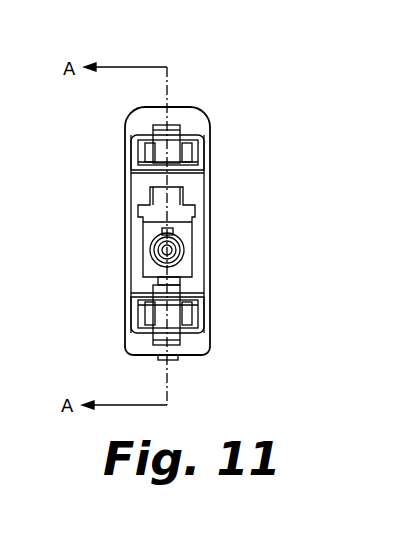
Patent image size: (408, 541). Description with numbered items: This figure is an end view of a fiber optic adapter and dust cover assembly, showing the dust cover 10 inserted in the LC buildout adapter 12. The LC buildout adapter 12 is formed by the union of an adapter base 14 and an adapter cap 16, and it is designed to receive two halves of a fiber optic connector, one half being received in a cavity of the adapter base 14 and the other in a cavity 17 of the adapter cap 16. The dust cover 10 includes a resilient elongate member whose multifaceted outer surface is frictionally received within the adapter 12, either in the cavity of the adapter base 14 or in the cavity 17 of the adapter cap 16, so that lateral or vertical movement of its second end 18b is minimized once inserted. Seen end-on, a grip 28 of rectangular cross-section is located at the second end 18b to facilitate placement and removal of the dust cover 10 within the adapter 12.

The dust cover 10 is at (198, 238).
The LC buildout adapter 12 is at (225, 95).
The adapter base 14 is at (140, 288).
The adapter cap 16 is at (149, 107).
The cavity 17 is at (160, 197).
The second end 18b is at (190, 267).
The grip 28 is at (148, 270).